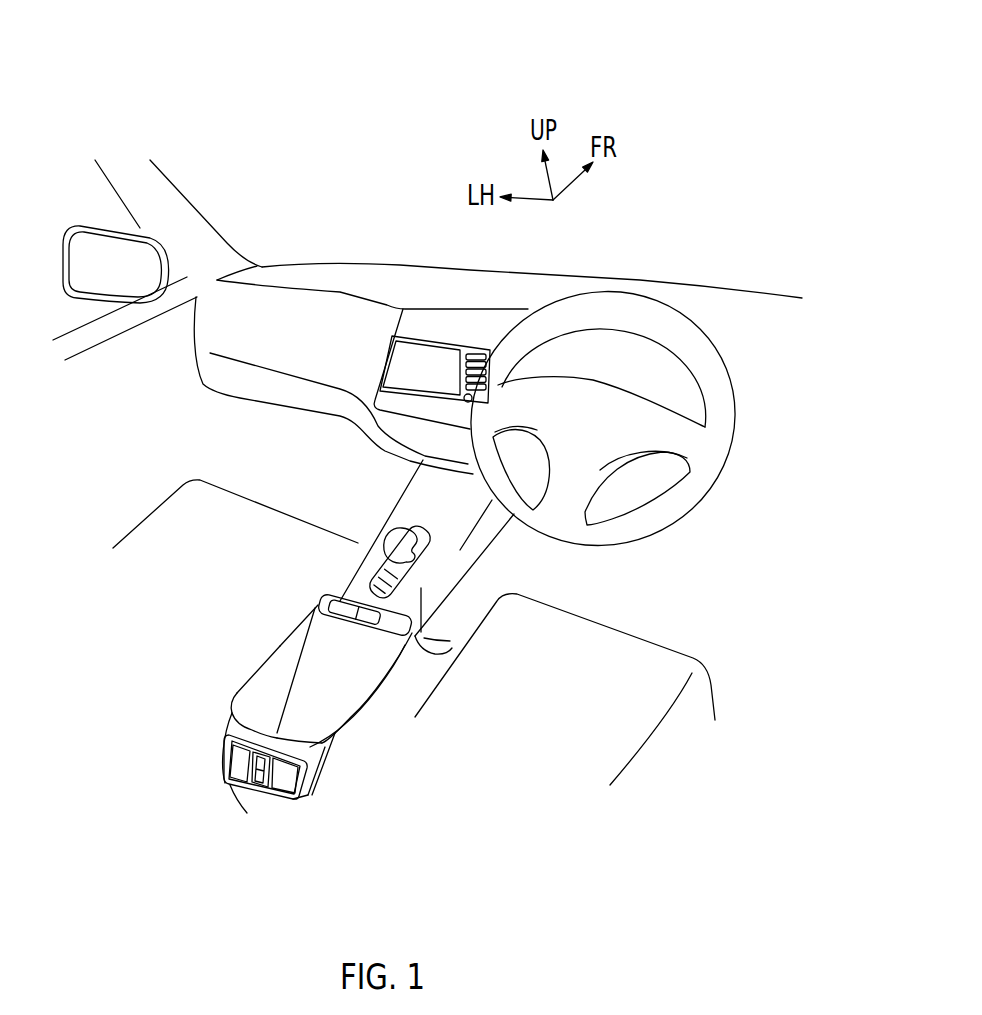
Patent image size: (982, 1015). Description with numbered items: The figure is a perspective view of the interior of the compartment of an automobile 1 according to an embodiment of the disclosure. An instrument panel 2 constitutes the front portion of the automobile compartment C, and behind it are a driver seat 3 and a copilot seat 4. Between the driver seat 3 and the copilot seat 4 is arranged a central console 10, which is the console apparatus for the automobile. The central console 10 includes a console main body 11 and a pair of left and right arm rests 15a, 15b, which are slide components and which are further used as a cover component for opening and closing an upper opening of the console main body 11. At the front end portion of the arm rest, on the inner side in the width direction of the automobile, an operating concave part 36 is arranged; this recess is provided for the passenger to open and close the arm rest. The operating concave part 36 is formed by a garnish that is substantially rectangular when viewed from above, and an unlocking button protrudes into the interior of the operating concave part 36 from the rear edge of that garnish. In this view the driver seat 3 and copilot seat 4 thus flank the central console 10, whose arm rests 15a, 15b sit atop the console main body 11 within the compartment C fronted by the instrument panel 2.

The automobile 1 is at (322, 104).
The instrument panel 2 is at (358, 312).
The driver seat 3 is at (632, 652).
The copilot seat 4 is at (232, 518).
The central console 10 is at (229, 689).
The console main body 11 is at (363, 735).
The left arm rest 15a is at (282, 673).
The right arm rest 15b is at (337, 668).
The operating concave part 36 is at (373, 620).
The automobile compartment C is at (144, 427).